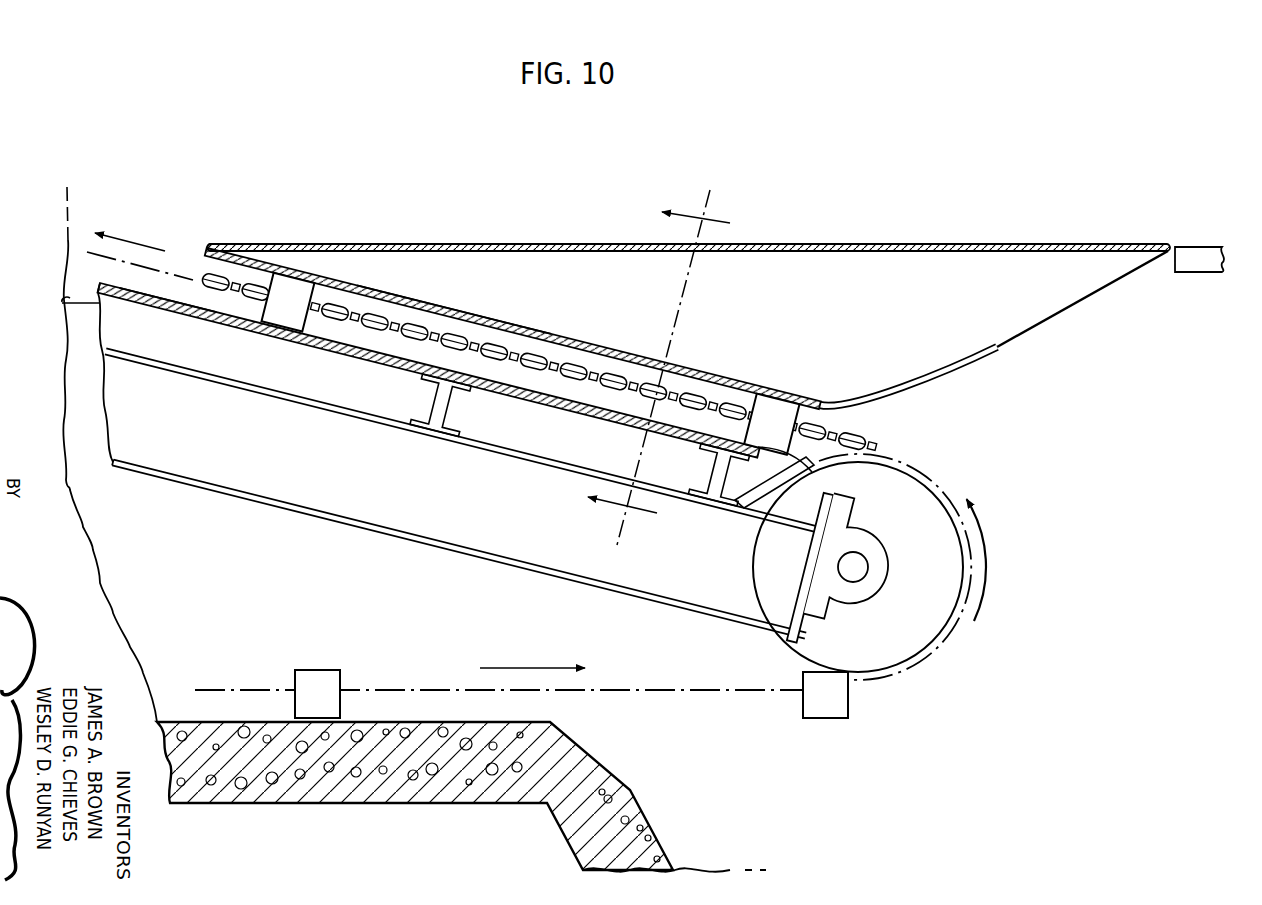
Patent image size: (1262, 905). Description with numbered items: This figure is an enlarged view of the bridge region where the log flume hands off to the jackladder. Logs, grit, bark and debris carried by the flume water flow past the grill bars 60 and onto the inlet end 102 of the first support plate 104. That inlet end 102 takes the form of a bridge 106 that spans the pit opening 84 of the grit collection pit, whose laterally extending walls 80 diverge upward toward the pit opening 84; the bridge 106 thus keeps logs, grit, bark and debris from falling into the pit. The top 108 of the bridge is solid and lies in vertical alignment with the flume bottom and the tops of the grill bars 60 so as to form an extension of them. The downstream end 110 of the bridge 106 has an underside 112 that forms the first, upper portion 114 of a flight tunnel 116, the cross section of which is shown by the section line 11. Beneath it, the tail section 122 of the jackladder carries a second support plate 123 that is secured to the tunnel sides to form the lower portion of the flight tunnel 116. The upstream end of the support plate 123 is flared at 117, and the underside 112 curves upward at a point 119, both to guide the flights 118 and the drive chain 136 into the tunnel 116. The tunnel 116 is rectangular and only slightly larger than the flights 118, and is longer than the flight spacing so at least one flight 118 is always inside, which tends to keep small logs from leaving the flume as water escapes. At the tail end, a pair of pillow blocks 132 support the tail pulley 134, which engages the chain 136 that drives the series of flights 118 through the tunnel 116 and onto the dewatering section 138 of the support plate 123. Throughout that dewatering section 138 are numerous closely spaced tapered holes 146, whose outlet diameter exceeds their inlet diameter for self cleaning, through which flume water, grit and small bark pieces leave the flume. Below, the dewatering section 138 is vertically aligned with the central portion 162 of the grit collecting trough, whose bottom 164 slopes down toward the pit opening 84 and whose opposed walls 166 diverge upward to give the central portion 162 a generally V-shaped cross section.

The grill bars 60 is at (1194, 258).
The laterally extending walls 80 is at (632, 822).
The pit opening 84 is at (770, 836).
The inlet end 102 is at (1138, 252).
The first support plate 104 is at (566, 246).
The bridge 106 is at (965, 275).
The top of the bridge 108 is at (887, 243).
The downstream end 110 is at (258, 246).
The underside 112 is at (393, 300).
The first, upper portion 114 is at (503, 318).
The flight tunnel 116 is at (590, 398).
The flared upstream end 117 is at (805, 468).
The flights 118 is at (288, 318).
The upward curve point 119 is at (938, 385).
The tail section 122 is at (400, 543).
The second support plate 123 is at (364, 362).
The pillow blocks 132 is at (868, 567).
The tail pulley 134 is at (938, 537).
The drive chain 136 is at (706, 386).
The dewatering section 138 is at (118, 305).
The tapered holes 146 is at (153, 300).
The central portion 162 is at (135, 548).
The bottom 164 is at (173, 716).
The opposed walls 166 is at (62, 302).
The section line 11 is at (663, 367).